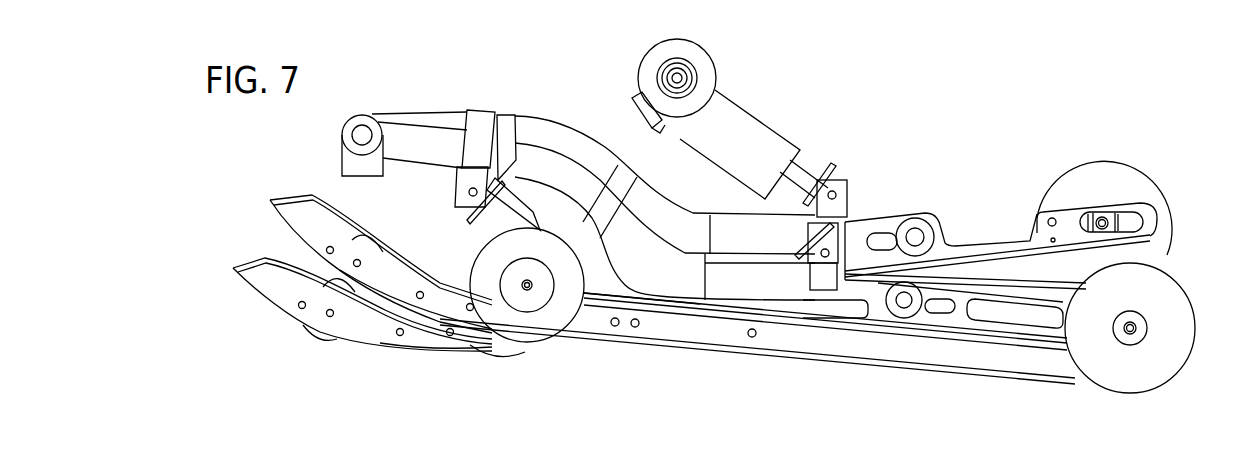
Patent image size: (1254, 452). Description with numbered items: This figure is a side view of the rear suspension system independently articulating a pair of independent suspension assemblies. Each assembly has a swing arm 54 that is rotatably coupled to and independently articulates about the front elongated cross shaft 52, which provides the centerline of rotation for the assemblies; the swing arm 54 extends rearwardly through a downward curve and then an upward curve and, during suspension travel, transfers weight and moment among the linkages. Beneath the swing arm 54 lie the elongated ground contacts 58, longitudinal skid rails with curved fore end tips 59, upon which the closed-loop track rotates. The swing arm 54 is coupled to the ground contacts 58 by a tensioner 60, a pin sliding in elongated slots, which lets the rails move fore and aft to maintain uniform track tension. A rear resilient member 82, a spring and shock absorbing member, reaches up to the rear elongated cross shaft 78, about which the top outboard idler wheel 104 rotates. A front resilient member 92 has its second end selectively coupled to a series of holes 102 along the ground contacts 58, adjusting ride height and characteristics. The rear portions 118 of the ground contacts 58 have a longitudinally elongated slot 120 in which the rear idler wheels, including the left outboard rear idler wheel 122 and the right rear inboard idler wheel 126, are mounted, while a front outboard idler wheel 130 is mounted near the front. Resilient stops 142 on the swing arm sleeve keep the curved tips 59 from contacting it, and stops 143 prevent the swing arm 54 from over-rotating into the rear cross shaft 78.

The front elongated cross shaft 52 is at (358, 128).
The stops 143 is at (342, 160).
The swing arm 54 is at (573, 178).
The rear resilient member 82 is at (755, 120).
The left side top outboard idler wheel 104 is at (650, 60).
The rear elongated cross shaft 78 is at (680, 75).
The stops 142 is at (637, 100).
The front outboard idler wheel 130 is at (487, 273).
The curved fore end tips 59 is at (292, 203).
The ground contacts 58 is at (473, 333).
The front resilient member 92 is at (590, 290).
The holes 102 is at (752, 337).
The tensioner 60 is at (915, 235).
The right rear inboard idler wheel 126 is at (1130, 180).
The longitudinally elongated slot 120 is at (1140, 222).
The left outboard rear idler wheel 122 is at (1150, 368).
The rear portions 118 is at (1122, 128).